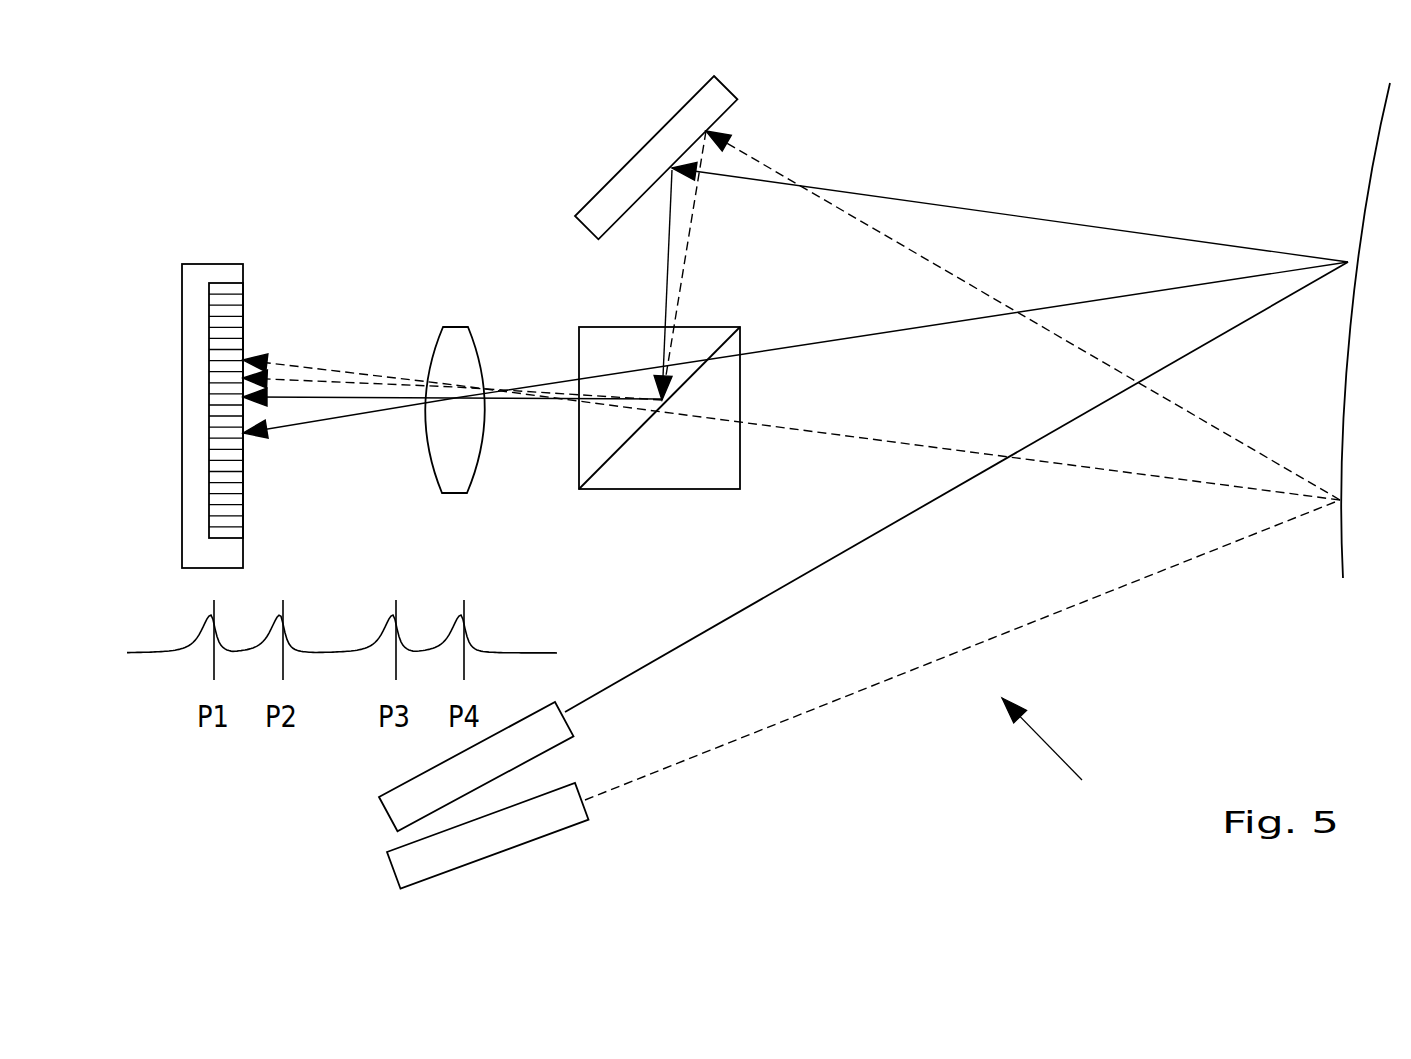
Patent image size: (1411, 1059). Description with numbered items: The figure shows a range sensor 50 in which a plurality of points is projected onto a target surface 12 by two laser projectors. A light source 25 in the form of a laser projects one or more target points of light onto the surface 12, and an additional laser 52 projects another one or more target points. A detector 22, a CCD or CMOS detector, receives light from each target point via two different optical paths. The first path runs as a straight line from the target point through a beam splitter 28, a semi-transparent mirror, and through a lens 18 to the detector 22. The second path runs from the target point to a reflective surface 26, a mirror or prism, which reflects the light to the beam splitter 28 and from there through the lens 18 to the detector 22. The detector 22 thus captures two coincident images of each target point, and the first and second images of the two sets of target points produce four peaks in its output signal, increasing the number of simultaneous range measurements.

The surface 12 is at (1362, 178).
The lens 18 is at (462, 338).
The detector 22 is at (213, 272).
The light source 25 is at (450, 777).
The reflective surface 26 is at (693, 125).
The beam splitter 28 is at (670, 482).
The range sensor 50 is at (1057, 753).
The additional laser 52 is at (517, 835).